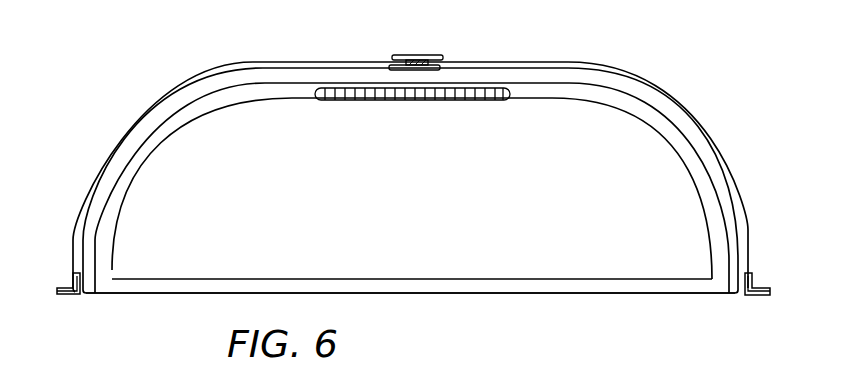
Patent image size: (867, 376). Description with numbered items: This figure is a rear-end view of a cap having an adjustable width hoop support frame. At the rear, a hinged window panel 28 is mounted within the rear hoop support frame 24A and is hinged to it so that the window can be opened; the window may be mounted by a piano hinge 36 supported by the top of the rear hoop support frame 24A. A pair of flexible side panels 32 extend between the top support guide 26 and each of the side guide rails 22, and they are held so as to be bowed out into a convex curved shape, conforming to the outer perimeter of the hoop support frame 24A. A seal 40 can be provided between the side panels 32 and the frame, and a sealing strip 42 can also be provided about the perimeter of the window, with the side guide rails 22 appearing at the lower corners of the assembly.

The side guide rail 22 is at (60, 282).
The rear hoop support frame 24A is at (268, 72).
The top support guide 26 is at (415, 55).
The hinged window panel 28 is at (148, 184).
The flexible side panel 32 is at (178, 82).
The piano hinge 36 is at (362, 97).
The seal 40 is at (148, 123).
The sealing strip 42 is at (612, 288).